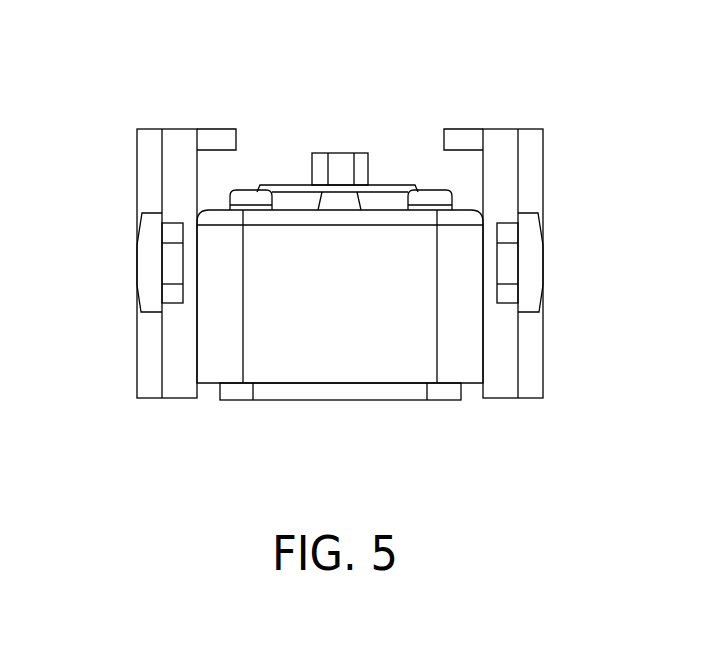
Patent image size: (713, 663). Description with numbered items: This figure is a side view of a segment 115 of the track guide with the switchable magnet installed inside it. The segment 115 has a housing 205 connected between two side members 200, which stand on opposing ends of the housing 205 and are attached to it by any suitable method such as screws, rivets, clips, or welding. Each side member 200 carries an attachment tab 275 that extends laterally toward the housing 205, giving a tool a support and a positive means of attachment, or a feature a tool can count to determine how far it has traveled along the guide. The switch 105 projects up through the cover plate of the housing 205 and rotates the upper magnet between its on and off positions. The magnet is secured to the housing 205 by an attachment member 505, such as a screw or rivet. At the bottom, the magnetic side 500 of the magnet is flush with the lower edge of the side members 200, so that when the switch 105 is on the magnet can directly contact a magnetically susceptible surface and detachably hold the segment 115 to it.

The segment 115 is at (614, 215).
The side member 200 is at (150, 363).
The attachment tab 275 is at (218, 129).
The switch 105 is at (345, 152).
The attachment member 505 is at (418, 189).
The housing 205 is at (291, 362).
The magnetic side 500 is at (382, 402).